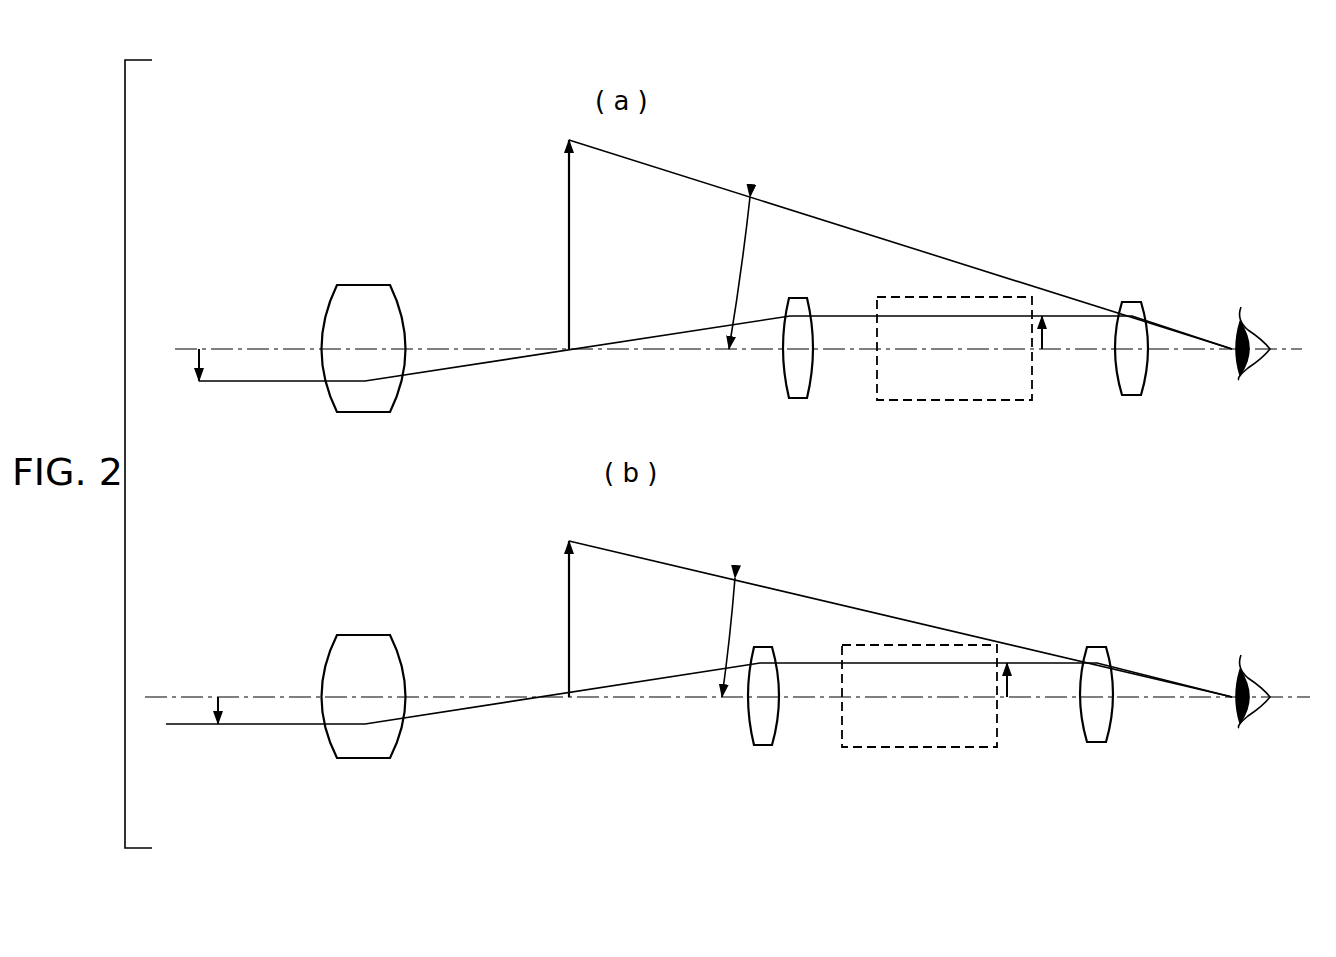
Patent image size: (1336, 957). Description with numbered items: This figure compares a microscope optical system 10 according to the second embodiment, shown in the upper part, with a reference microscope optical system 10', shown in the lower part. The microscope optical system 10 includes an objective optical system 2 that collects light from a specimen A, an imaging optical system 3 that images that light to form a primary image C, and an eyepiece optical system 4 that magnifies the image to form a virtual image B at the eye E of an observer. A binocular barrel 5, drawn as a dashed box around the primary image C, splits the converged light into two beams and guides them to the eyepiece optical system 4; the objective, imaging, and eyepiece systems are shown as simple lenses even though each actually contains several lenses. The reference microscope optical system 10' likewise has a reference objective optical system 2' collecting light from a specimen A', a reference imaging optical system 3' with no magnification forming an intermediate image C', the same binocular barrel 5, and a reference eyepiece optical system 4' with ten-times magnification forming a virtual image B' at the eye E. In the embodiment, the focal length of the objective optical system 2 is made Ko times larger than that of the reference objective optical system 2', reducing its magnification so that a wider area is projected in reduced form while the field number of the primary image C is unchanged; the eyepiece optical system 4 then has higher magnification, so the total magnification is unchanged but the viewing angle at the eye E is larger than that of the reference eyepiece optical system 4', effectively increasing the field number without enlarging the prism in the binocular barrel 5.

The objective optical system 2 is at (392, 348).
The imaging optical system 3 is at (798, 383).
The eyepiece optical system 4 is at (1131, 385).
The binocular barrel 5 is at (958, 401).
The microscope optical system 10 is at (1058, 205).
The reference objective optical system 2' is at (396, 696).
The reference imaging optical system 3' is at (766, 729).
The reference eyepiece optical system 4' is at (1097, 729).
The reference microscope optical system 10' is at (1103, 558).
The specimen A is at (168, 368).
The virtual image B is at (607, 244).
The primary image C is at (1053, 361).
The eye E is at (1262, 335).
The specimen A' is at (198, 694).
The virtual image B' is at (611, 619).
The intermediate image C' is at (1022, 708).